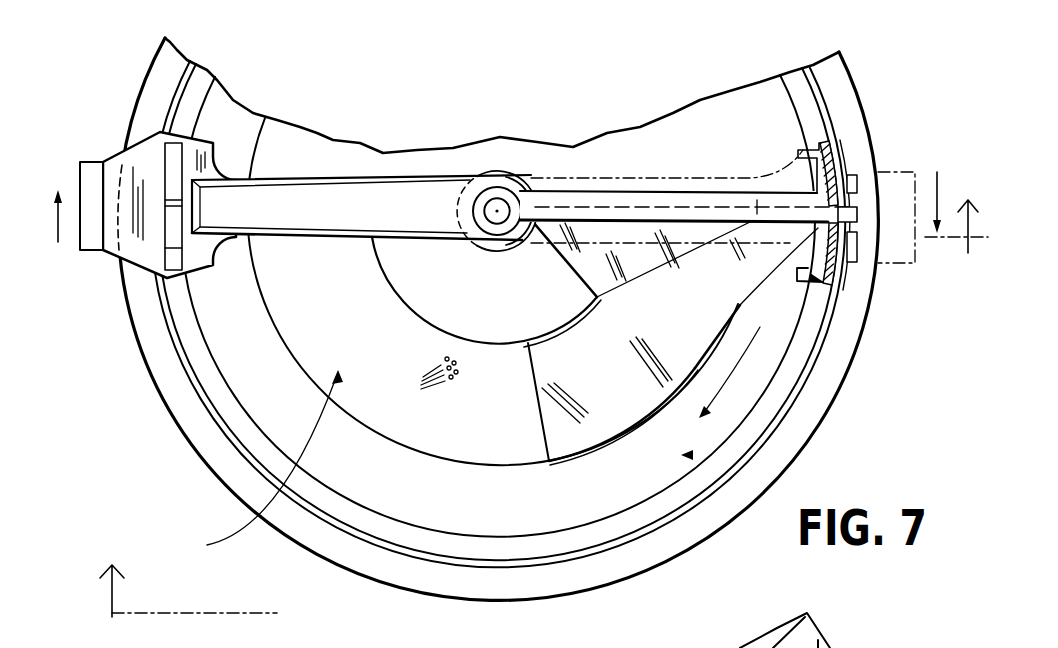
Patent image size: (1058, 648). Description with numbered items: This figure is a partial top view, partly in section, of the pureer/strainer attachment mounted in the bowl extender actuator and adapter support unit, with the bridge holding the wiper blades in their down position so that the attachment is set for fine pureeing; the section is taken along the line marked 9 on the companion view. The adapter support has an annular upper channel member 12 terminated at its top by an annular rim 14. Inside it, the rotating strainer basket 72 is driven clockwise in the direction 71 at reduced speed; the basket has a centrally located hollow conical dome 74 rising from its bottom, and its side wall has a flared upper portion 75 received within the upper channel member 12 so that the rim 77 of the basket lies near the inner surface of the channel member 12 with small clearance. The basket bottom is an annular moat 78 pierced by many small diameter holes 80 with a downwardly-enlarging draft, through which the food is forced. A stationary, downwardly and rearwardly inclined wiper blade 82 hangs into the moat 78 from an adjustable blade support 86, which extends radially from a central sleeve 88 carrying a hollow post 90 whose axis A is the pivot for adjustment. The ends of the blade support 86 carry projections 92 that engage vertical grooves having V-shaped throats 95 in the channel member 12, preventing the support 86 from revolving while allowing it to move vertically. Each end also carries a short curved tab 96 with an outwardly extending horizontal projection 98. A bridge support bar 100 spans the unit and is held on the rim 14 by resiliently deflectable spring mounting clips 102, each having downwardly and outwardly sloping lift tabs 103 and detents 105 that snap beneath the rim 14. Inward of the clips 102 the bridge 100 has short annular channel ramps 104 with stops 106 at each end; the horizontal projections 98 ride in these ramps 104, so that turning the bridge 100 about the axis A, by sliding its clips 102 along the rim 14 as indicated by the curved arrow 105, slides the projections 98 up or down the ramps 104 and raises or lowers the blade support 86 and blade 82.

The section line 9- 9 is at (540, 418).
The upper channel member 12 is at (768, 405).
The annular rim 14 is at (843, 378).
The clockwise direction 71 is at (733, 380).
The rotating strainer basket 72 is at (690, 455).
The conical dome 74 is at (459, 298).
The upper portion 75 is at (647, 482).
The rim 77 is at (737, 428).
The annular moat bottom region 78 is at (258, 464).
The holes 80 is at (424, 379).
The wiper blade 82 is at (617, 393).
The adjustable blade support 86 is at (668, 181).
The central sleeve 88 is at (543, 188).
The hollow post 90 is at (503, 200).
The projections 92 is at (858, 213).
The V-shaped throats 95 is at (853, 193).
The curved tab 96 is at (803, 173).
The horizontal projections 98 is at (837, 160).
The bridge support bar 100 is at (313, 197).
The spring mounting clips 102 is at (107, 183).
The lift tabs 103 is at (75, 190).
The annular channel ramps 104 is at (818, 254).
The detents 105 is at (62, 258).
The stops 106 is at (808, 283).
The axis A is at (494, 205).